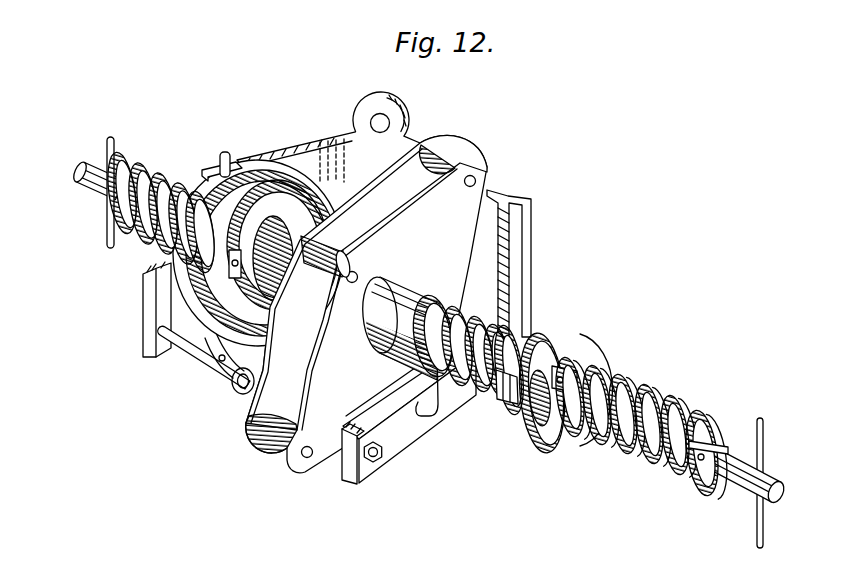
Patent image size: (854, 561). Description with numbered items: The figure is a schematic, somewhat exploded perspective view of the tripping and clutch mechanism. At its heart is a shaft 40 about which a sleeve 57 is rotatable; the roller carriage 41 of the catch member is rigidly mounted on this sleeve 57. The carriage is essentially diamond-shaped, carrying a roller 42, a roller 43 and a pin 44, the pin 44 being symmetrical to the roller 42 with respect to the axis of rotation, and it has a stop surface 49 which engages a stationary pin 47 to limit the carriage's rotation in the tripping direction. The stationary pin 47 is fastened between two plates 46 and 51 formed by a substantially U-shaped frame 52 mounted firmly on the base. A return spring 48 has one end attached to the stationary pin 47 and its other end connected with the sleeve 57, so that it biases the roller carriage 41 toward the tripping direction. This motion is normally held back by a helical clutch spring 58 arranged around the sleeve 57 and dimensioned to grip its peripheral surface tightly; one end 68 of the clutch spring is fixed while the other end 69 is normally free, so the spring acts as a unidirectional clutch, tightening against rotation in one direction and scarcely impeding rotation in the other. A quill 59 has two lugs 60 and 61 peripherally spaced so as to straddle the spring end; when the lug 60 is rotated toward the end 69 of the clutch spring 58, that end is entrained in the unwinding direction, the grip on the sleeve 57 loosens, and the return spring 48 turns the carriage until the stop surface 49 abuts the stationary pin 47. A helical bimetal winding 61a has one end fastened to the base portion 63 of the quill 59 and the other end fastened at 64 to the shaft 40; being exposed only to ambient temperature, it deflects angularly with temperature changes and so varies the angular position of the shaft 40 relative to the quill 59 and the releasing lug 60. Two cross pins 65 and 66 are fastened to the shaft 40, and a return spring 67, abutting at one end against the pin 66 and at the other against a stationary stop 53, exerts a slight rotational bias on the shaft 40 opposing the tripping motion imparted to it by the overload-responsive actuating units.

The shaft 40 is at (90, 187).
The roller carriage 41 is at (457, 242).
The roller 42 is at (268, 455).
The roller 43 is at (352, 257).
The pin 44 is at (440, 152).
The plate 46 is at (158, 307).
The stationary pin 47 is at (193, 363).
The return spring 48 is at (283, 165).
The stop surface 49 is at (338, 447).
The plate 51 is at (403, 437).
The U-shaped frame 52 is at (493, 197).
The stationary stop 53 is at (203, 157).
The sleeve 57 is at (273, 290).
The helical clutch spring 58 is at (478, 305).
The quill 59 is at (593, 350).
The lug 60 is at (553, 337).
The lug 61 is at (515, 410).
The helical bimetal winding 61a is at (627, 467).
The base portion 63 is at (617, 363).
The fastening point 64 is at (717, 445).
The cross pin 65 is at (757, 545).
The cross pin 66 is at (120, 148).
The return spring 67 is at (158, 170).
The fixed end of clutch spring 68 is at (424, 422).
The free end of clutch spring 69 is at (496, 405).